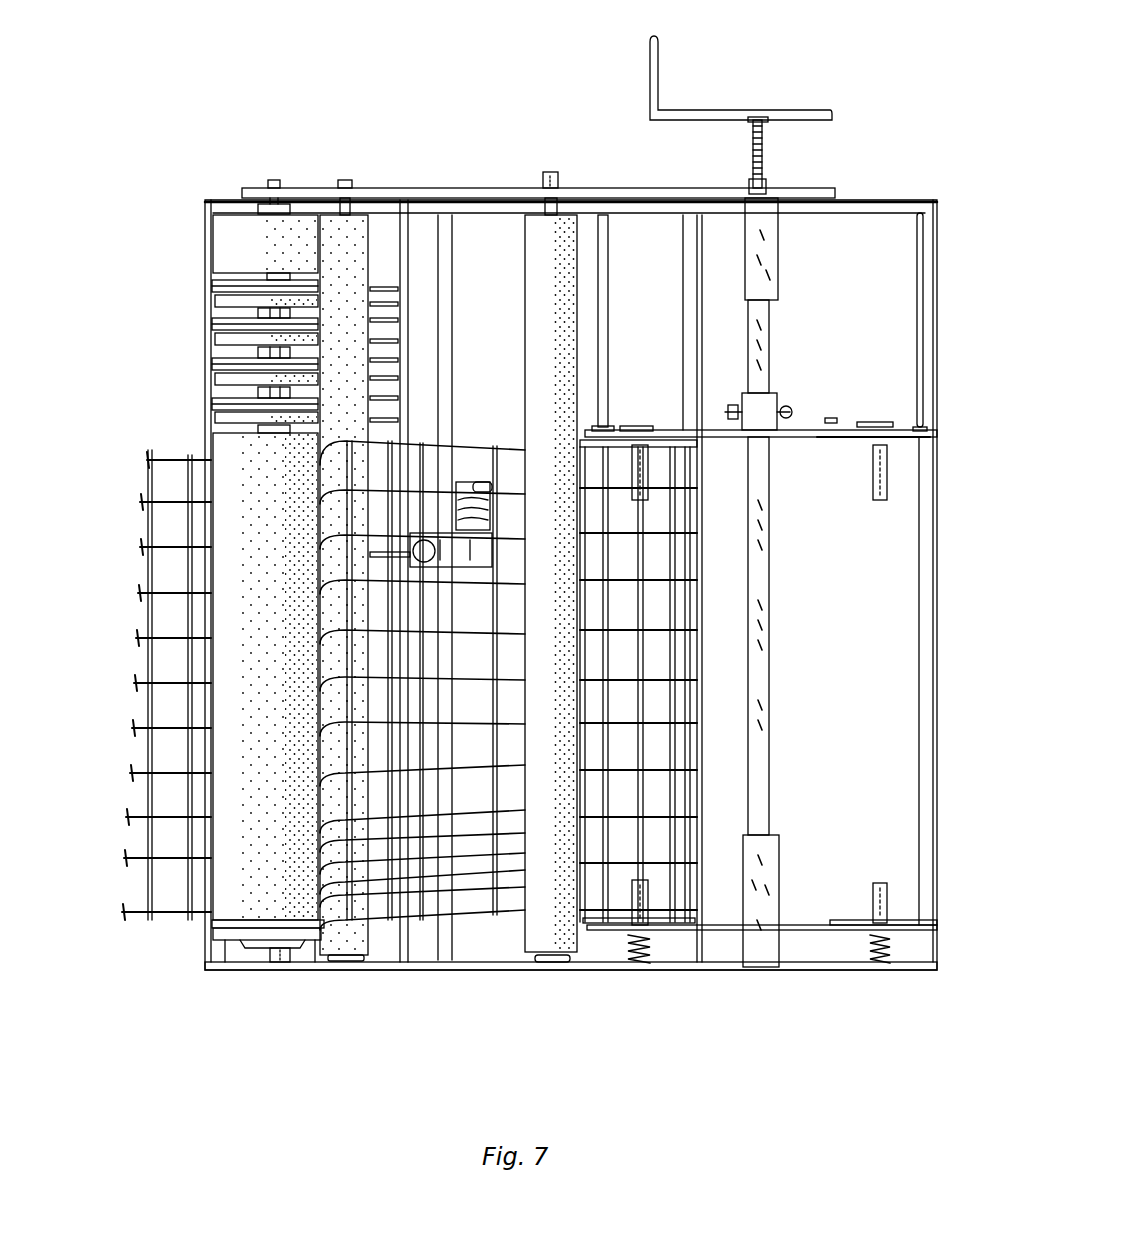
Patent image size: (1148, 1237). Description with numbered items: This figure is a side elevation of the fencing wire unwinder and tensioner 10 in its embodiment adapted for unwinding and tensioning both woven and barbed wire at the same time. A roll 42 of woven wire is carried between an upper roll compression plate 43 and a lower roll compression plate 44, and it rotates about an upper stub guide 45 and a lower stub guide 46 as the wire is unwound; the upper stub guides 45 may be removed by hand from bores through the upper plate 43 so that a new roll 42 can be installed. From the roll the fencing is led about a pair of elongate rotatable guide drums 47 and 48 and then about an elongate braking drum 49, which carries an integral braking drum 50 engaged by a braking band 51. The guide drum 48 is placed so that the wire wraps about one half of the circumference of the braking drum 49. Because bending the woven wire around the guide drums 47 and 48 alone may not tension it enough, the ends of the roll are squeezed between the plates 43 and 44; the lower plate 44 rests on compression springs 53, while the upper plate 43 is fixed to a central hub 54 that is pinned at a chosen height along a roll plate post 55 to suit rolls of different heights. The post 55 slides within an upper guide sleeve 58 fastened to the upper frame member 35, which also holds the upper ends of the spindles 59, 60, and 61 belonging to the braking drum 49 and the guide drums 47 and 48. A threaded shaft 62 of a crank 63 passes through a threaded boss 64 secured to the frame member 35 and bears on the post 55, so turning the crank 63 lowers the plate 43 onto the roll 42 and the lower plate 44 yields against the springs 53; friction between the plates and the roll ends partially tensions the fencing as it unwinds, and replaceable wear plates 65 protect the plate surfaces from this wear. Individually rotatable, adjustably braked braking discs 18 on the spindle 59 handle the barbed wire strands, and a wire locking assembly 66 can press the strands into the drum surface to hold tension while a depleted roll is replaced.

The fencing wire unwinder and tensioner 10 is at (383, 74).
The braking discs 18 is at (205, 372).
The upper frame member 35 is at (641, 188).
The roll of woven wire 42 is at (697, 760).
The upper roll compression plate 43 is at (815, 430).
The lower roll compression plate 44 is at (818, 935).
The upper stub guide 45 is at (648, 430).
The lower stub guide 46 is at (878, 898).
The guide drum 47 is at (528, 237).
The guide drum 48 is at (333, 940).
The braking drum 49 is at (228, 455).
The integral braking drum 50 is at (213, 922).
The braking band 51 is at (225, 566).
The compression springs 53 is at (650, 940).
The central hub 54 is at (745, 405).
The roll plate post 55 is at (772, 320).
The upper guide sleeve 58 is at (752, 270).
The spindle 59 is at (272, 180).
The spindle 60 is at (345, 180).
The spindle 61 is at (550, 172).
The threaded shaft 62 is at (764, 150).
The crank 63 is at (660, 70).
The boss 64 is at (752, 185).
The wear plates 65 is at (698, 467).
The wire locking assembly 66 is at (498, 510).